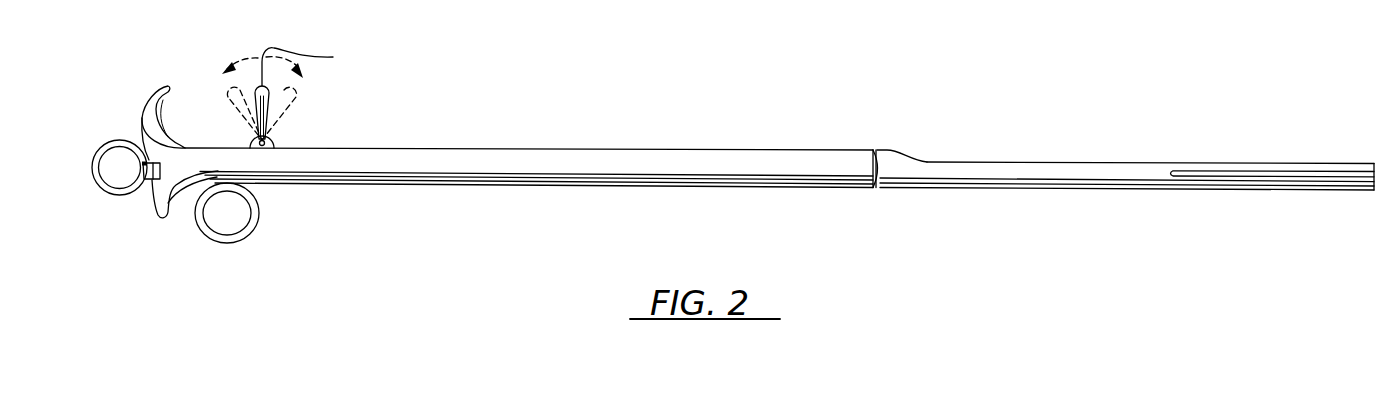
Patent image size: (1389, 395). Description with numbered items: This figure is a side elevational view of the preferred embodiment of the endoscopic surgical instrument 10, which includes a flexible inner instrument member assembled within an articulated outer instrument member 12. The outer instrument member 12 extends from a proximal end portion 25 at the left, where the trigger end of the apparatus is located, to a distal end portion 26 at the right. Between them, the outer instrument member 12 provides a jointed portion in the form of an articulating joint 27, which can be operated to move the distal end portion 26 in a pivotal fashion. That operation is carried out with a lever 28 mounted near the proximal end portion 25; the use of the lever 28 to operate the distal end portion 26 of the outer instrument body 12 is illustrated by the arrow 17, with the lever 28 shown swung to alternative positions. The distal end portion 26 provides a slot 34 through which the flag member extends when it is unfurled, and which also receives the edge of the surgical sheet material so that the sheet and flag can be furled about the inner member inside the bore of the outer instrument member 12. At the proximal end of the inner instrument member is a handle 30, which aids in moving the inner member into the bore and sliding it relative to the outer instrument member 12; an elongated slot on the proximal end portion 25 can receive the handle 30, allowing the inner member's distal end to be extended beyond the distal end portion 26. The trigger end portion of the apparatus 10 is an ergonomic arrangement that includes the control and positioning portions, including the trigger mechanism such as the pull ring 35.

The endoscopic surgical instrument 10 is at (716, 110).
The outer instrument member 12 is at (788, 162).
The arrow 17 is at (306, 62).
The proximal end portion 25 is at (191, 147).
The distal end portion 26 is at (1352, 163).
The articulating joint 27 is at (879, 152).
The lever 28 is at (291, 105).
The handle 30 is at (253, 233).
The slot 34 is at (1258, 176).
The pull ring 35 is at (118, 195).